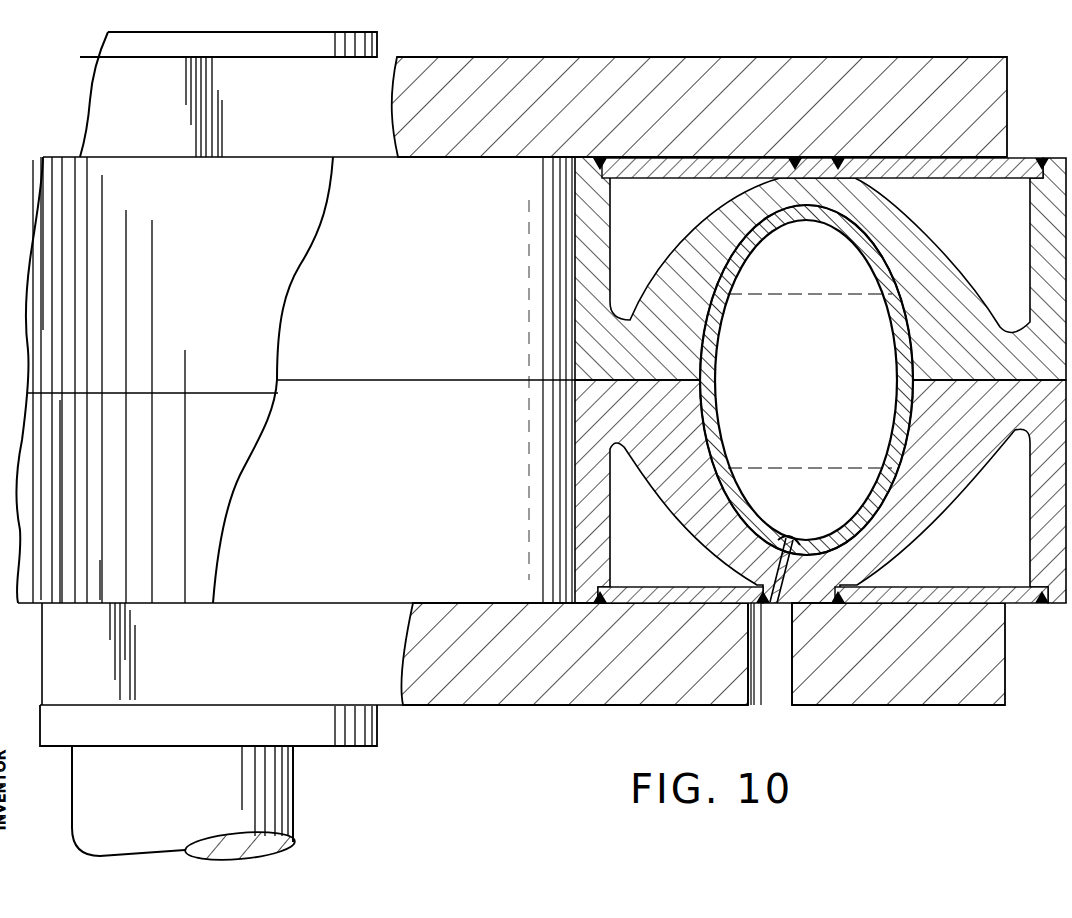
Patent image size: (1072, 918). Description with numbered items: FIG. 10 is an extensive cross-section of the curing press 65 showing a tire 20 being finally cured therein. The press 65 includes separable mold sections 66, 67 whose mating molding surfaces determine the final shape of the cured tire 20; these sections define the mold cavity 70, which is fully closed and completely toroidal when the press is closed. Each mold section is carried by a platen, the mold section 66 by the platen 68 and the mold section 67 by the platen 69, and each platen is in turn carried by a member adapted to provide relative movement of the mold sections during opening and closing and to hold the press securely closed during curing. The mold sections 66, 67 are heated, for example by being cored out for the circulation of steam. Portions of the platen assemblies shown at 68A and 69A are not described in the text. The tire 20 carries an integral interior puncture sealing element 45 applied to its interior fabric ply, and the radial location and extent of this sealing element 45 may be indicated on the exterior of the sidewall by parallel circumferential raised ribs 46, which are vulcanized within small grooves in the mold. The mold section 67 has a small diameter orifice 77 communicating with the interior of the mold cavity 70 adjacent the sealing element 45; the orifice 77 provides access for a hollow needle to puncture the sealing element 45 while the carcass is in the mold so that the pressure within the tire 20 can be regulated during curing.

The tire 20 is at (708, 350).
The sealing element 45 is at (788, 540).
The circumferential raised ribs 46 is at (793, 560).
The press 65 is at (789, 347).
The mold section 66 is at (583, 326).
The mold section 67 is at (583, 425).
The platen 68 is at (755, 57).
The upper flange 68A is at (378, 40).
The platen 69 is at (478, 697).
The lower flange 69A is at (292, 805).
The mold cavity 70 is at (809, 420).
The orifice 77 is at (795, 606).